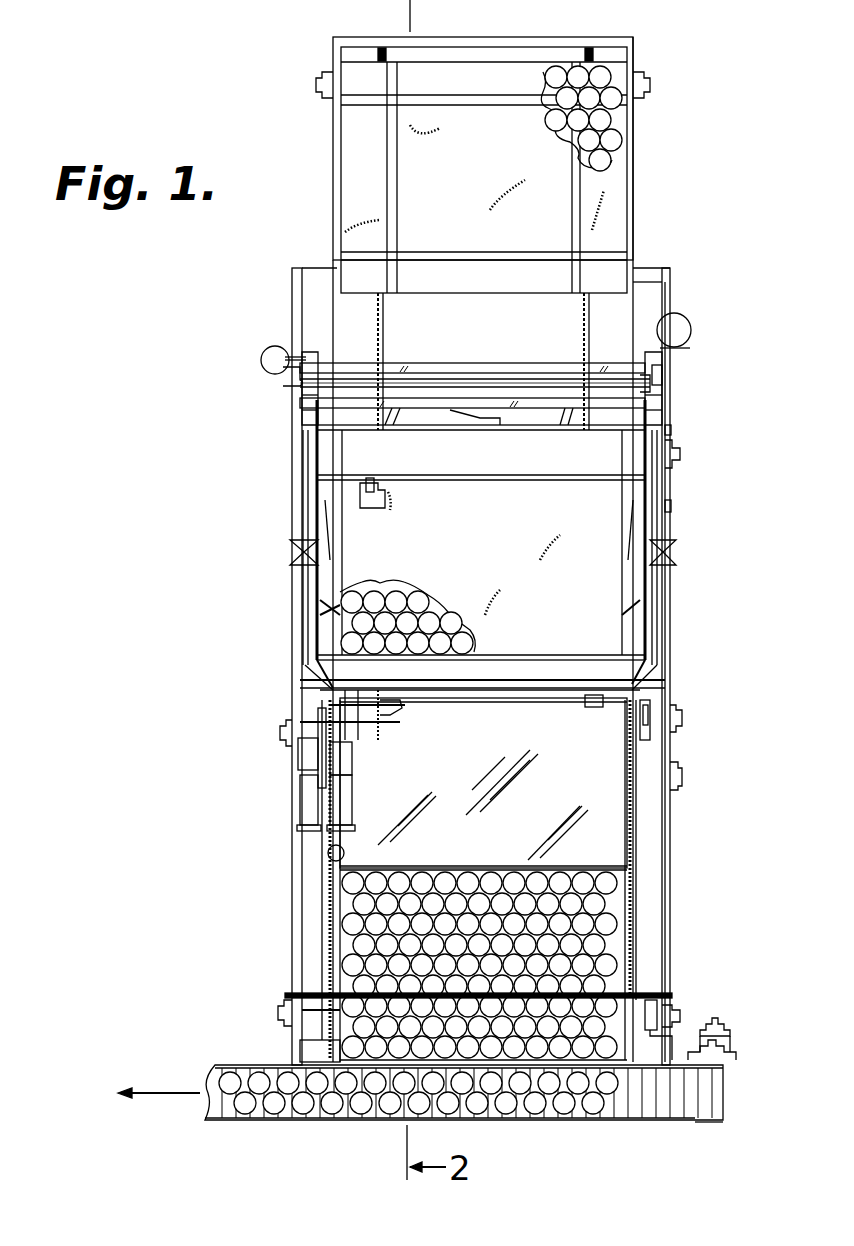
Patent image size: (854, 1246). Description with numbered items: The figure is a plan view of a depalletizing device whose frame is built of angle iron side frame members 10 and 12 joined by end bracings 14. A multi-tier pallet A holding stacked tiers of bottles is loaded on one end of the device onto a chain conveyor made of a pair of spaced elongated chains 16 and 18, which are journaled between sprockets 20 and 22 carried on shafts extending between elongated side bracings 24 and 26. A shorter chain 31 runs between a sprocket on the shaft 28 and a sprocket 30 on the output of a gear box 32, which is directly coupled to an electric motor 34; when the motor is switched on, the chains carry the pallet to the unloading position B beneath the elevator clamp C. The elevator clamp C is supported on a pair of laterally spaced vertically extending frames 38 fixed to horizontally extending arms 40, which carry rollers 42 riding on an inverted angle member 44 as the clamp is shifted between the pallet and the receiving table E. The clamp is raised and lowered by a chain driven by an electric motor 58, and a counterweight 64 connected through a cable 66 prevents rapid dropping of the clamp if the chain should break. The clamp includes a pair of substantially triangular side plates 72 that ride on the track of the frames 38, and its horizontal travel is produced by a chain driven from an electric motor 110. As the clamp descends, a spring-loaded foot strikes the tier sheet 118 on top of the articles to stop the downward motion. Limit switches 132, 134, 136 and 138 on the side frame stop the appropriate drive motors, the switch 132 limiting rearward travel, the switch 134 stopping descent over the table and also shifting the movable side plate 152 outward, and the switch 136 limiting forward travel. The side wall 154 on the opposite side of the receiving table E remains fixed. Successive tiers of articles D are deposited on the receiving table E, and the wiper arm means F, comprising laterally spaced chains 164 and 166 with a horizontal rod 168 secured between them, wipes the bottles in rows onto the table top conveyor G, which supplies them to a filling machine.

The side frame member 10 is at (292, 290).
The side frame member 12 is at (670, 290).
The end bracings 14 is at (642, 270).
The elongated chain 16 is at (584, 345).
The elongated chain 18 is at (383, 345).
The sprocket 20 is at (390, 22).
The sprocket 22 is at (410, 704).
The side bracing 24 is at (334, 154).
The side bracing 26 is at (634, 150).
The shaft 28 is at (332, 706).
The sprocket 30 is at (352, 758).
The shorter chain 31 is at (370, 745).
The gear box 32 is at (358, 780).
The electric motor 34 is at (320, 812).
The vertically extending frame 38 is at (300, 402).
The horizontally extending arm 40 is at (296, 472).
The roller 42 is at (664, 374).
The inverted angle member 44 is at (672, 750).
The electric motor 58 is at (688, 326).
The counterweight 64 is at (262, 360).
The cable 66 is at (504, 362).
The side plate 72 is at (303, 436).
The electric motor 110 is at (300, 760).
The tier sheet 118 is at (510, 532).
The limit switch 132 is at (680, 454).
The limit switch 134 is at (648, 716).
The limit switch 136 is at (682, 780).
The limit switch 138 is at (652, 1000).
The movable side plate 152 is at (322, 850).
The side wall 154 is at (630, 824).
The chain 164 is at (328, 964).
The chain 166 is at (636, 850).
The horizontal rod 168 is at (446, 860).
The multi-tier pallet A is at (548, 72).
The unloading position B is at (610, 645).
The elevator clamp C is at (318, 610).
The tiers of articles D is at (396, 590).
The receiving table E is at (562, 772).
The wiper arm means F is at (424, 866).
The table top conveyor G is at (242, 1047).